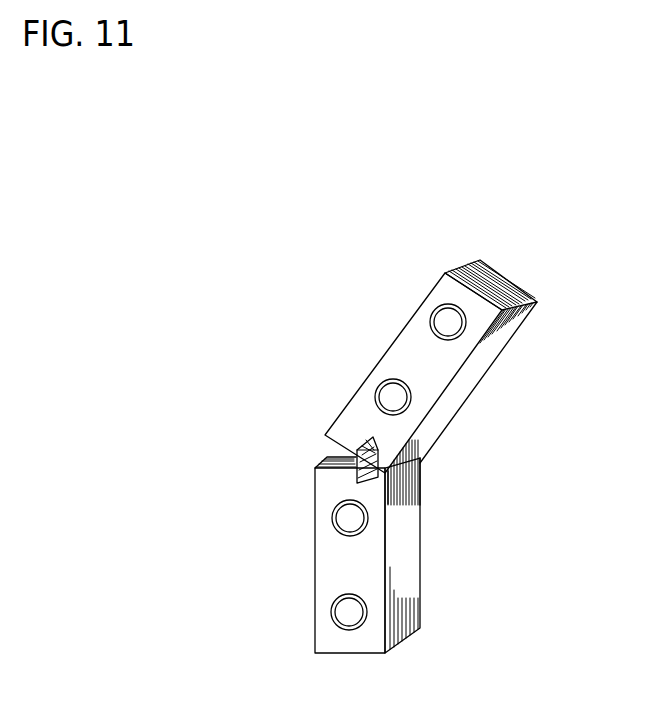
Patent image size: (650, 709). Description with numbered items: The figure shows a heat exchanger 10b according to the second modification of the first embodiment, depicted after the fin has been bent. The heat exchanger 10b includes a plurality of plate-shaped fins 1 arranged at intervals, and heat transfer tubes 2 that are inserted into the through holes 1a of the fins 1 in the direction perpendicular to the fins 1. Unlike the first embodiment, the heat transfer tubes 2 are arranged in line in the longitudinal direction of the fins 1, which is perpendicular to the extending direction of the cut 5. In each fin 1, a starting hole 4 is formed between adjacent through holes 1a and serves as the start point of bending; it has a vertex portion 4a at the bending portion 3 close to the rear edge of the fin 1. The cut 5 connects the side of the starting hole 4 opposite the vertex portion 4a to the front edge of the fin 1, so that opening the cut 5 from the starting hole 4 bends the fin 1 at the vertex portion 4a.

The heat exchanger 10b is at (539, 247).
The fin 1 is at (445, 291).
The through hole 1a is at (350, 616).
The heat transfer tube 2 is at (348, 610).
The bending portion 3 is at (417, 478).
The starting hole 4 is at (340, 452).
The vertex portion 4a is at (417, 488).
The cut 5 is at (323, 443).